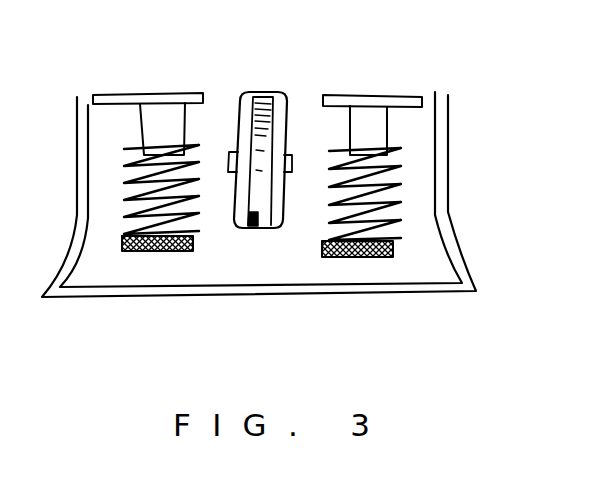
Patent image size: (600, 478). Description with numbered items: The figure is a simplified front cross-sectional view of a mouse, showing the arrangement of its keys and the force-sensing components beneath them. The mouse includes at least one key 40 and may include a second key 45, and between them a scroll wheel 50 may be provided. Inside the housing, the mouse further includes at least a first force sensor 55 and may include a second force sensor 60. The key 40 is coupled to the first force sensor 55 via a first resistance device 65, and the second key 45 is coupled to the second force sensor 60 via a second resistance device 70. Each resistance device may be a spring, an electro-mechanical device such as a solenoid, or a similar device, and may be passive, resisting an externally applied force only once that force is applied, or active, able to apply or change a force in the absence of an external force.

The key 40 is at (410, 80).
The second key 45 is at (100, 87).
The scroll wheel 50 is at (277, 82).
The first force sensor 55 is at (338, 260).
The second force sensor 60 is at (183, 257).
The first resistance device 65 is at (314, 172).
The second resistance device 70 is at (209, 160).